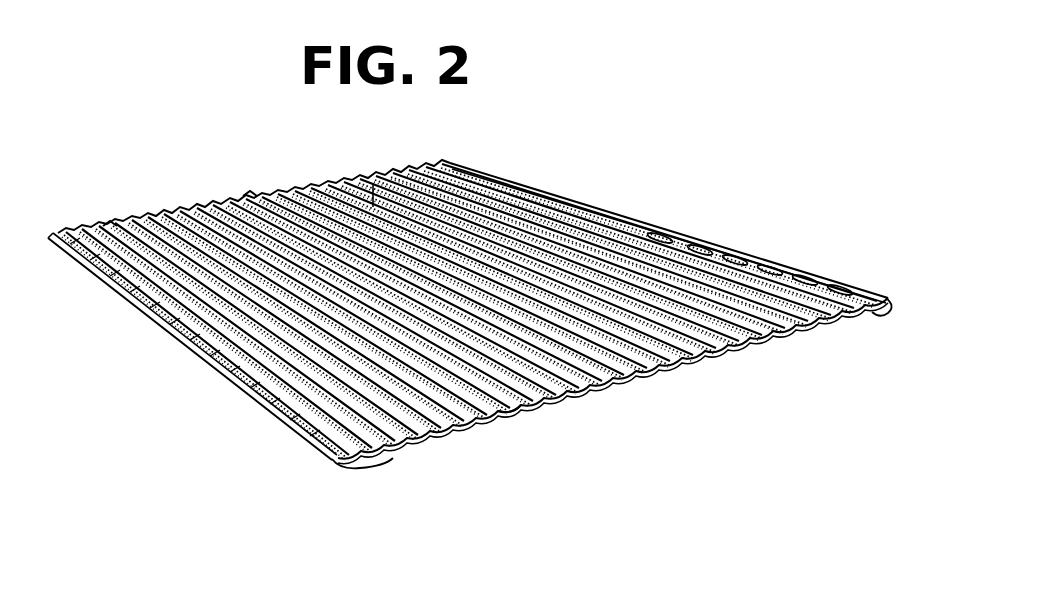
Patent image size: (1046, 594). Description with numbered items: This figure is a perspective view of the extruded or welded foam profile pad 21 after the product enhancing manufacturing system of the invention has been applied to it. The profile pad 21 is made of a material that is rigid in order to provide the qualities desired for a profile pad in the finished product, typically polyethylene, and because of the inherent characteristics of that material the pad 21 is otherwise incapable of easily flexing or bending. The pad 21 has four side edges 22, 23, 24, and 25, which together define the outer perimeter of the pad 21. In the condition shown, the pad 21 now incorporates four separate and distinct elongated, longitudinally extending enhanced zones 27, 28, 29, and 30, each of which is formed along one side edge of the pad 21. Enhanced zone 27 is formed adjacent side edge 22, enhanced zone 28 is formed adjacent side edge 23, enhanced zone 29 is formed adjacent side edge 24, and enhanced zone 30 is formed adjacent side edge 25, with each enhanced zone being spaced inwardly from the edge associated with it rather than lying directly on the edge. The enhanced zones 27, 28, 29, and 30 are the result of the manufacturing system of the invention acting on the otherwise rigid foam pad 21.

The profile pad 21 is at (476, 167).
The side edge 22 is at (659, 391).
The side edge 23 is at (744, 238).
The side edge 24 is at (250, 192).
The side edge 25 is at (183, 345).
The enhanced zone 27 is at (517, 425).
The enhanced zone 28 is at (648, 220).
The enhanced zone 29 is at (110, 224).
The enhanced zone 30 is at (270, 383).